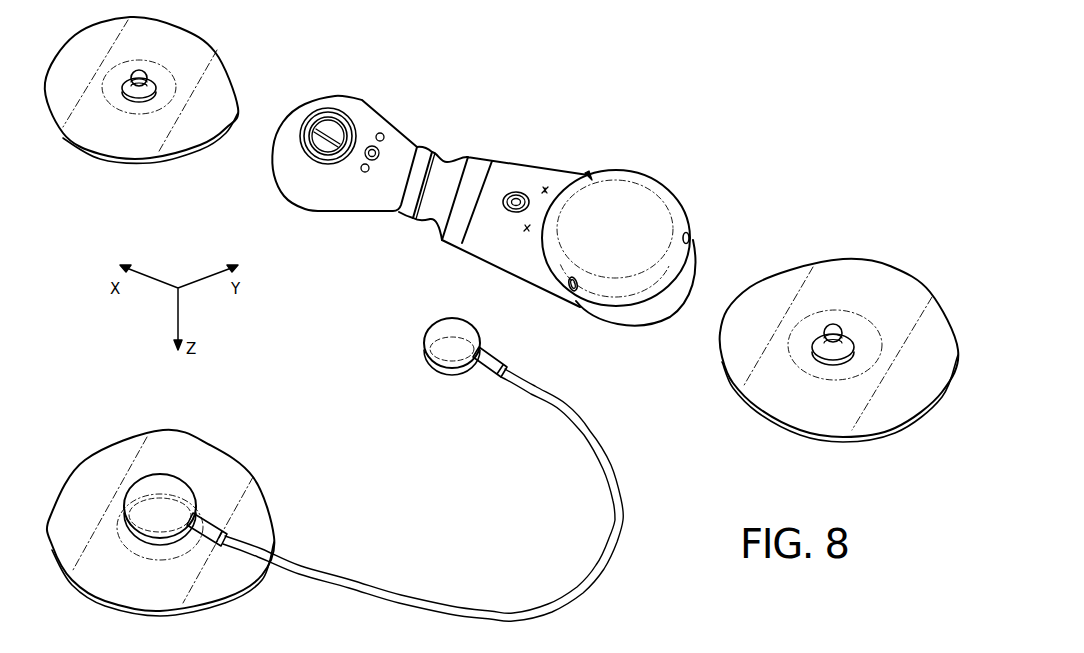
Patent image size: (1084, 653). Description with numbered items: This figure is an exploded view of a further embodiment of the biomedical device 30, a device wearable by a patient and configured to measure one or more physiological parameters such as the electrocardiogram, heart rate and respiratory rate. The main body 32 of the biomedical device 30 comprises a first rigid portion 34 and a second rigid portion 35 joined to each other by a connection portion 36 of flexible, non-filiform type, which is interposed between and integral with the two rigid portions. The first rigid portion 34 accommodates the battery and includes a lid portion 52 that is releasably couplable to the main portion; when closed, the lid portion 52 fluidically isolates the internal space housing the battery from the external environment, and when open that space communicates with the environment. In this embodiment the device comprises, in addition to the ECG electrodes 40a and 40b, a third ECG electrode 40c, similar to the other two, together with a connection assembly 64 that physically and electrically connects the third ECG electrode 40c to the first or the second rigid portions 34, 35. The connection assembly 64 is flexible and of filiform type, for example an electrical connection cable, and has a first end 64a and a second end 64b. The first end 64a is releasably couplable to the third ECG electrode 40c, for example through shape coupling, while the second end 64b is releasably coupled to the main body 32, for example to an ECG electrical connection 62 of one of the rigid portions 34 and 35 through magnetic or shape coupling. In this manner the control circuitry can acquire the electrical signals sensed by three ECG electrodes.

The biomedical device 30 is at (668, 112).
The main body 32 is at (510, 166).
The first rigid portion 34 is at (565, 176).
The second rigid portion 35 is at (365, 120).
The connection portion 36 is at (407, 200).
The ECG electrode 40a is at (873, 280).
The ECG electrode 40b is at (118, 143).
The third ECG electrode 40c is at (107, 453).
The lid portion 52 is at (645, 200).
The ECG electrical connection 62 is at (519, 190).
The connection assembly 64 is at (567, 587).
The first end 64a is at (170, 470).
The second end 64b is at (437, 370).